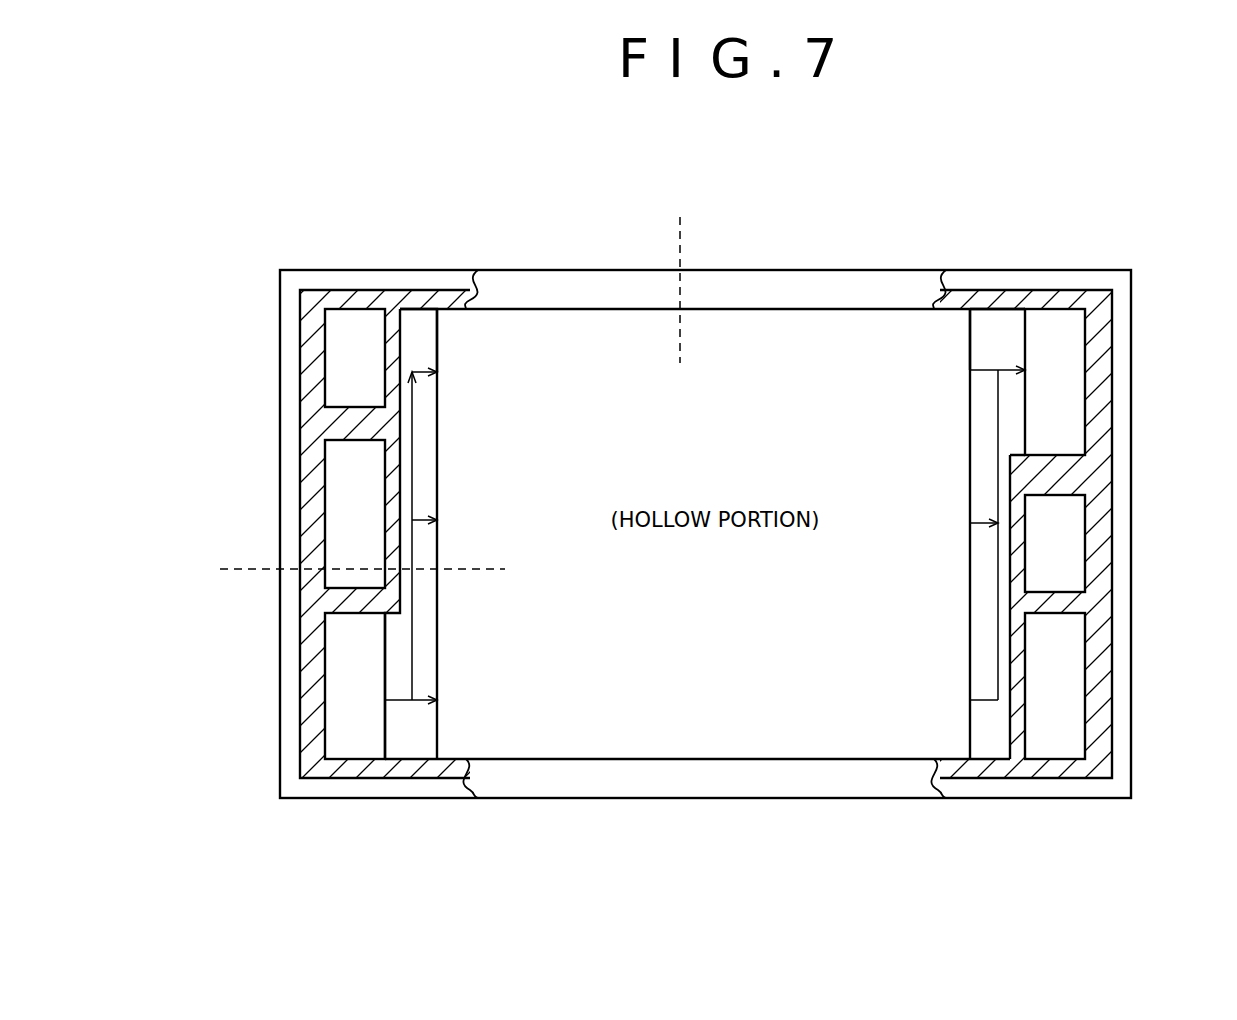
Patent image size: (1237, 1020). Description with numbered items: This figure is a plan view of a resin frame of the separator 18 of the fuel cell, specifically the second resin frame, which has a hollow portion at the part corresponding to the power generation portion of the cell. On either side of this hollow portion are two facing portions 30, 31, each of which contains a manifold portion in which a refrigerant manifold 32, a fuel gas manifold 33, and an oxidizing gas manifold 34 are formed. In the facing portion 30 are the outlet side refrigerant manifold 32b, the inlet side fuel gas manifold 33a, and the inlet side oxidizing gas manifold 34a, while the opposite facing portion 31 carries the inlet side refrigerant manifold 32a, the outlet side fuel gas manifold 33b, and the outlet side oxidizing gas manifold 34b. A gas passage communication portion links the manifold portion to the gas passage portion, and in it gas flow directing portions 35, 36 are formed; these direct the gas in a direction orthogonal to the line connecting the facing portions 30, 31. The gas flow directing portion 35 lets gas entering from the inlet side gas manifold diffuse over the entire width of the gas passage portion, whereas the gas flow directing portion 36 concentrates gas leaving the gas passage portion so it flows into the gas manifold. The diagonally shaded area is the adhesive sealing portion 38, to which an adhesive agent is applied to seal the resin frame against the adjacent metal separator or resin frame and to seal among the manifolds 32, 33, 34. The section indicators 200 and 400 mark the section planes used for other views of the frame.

The separator 18 is at (837, 270).
The facing portion 30 is at (407, 735).
The facing portion 31 is at (988, 740).
The refrigerant manifold 32 is at (363, 343).
The inlet side refrigerant manifold 32a is at (1060, 547).
The outlet side refrigerant manifold 32b is at (357, 373).
The fuel gas manifold 33 is at (355, 462).
The inlet side fuel gas manifold 33a is at (343, 515).
The outlet side fuel gas manifold 33b is at (1060, 713).
The oxidizing gas manifold 34 is at (352, 680).
The inlet side oxidizing gas manifold 34a is at (347, 705).
The outlet side oxidizing gas manifold 34b is at (1063, 362).
The gas flow directing portion 35 is at (422, 315).
The gas flow directing portion 36 is at (1002, 337).
The adhesive sealing portion 38 is at (363, 298).
The section line 200 is at (482, 553).
The section line 400 is at (662, 340).